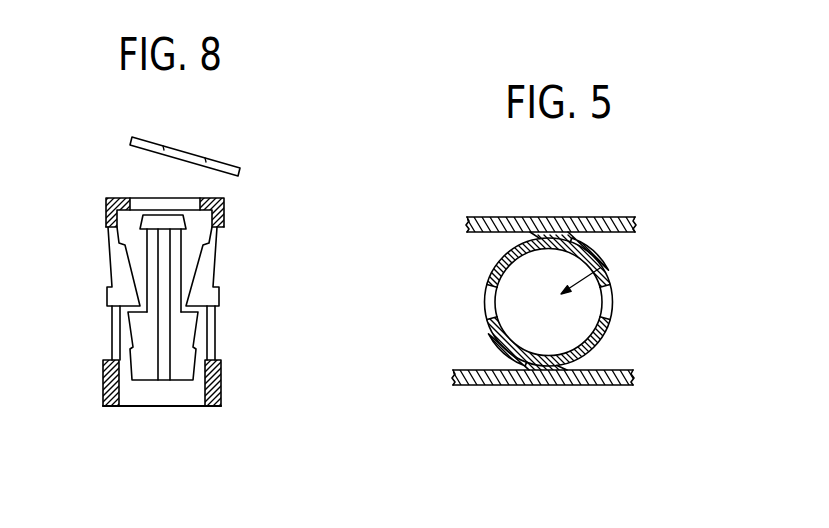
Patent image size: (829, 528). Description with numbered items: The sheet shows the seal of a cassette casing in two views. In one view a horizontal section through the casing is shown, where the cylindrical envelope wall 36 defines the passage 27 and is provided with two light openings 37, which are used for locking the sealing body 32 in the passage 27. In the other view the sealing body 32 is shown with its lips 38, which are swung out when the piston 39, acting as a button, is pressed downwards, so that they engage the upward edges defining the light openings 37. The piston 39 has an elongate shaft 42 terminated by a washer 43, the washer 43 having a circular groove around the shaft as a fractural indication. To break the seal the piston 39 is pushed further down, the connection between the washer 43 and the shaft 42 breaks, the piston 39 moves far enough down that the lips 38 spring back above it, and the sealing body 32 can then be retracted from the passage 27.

In FIG. 8, the washer 43 is at (227, 166).
In FIG. 8, the elongate shaft 42 is at (165, 253).
In FIG. 8, the lips 38 is at (115, 269).
In FIG. 8, the piston 39 is at (180, 332).
In FIG. 8, the sealing body 32 is at (222, 388).
In FIG. 5, the passage 27 is at (600, 268).
In FIG. 5, the light openings 37 is at (488, 307).
In FIG. 5, the cylindrical envelope wall 36 is at (572, 340).